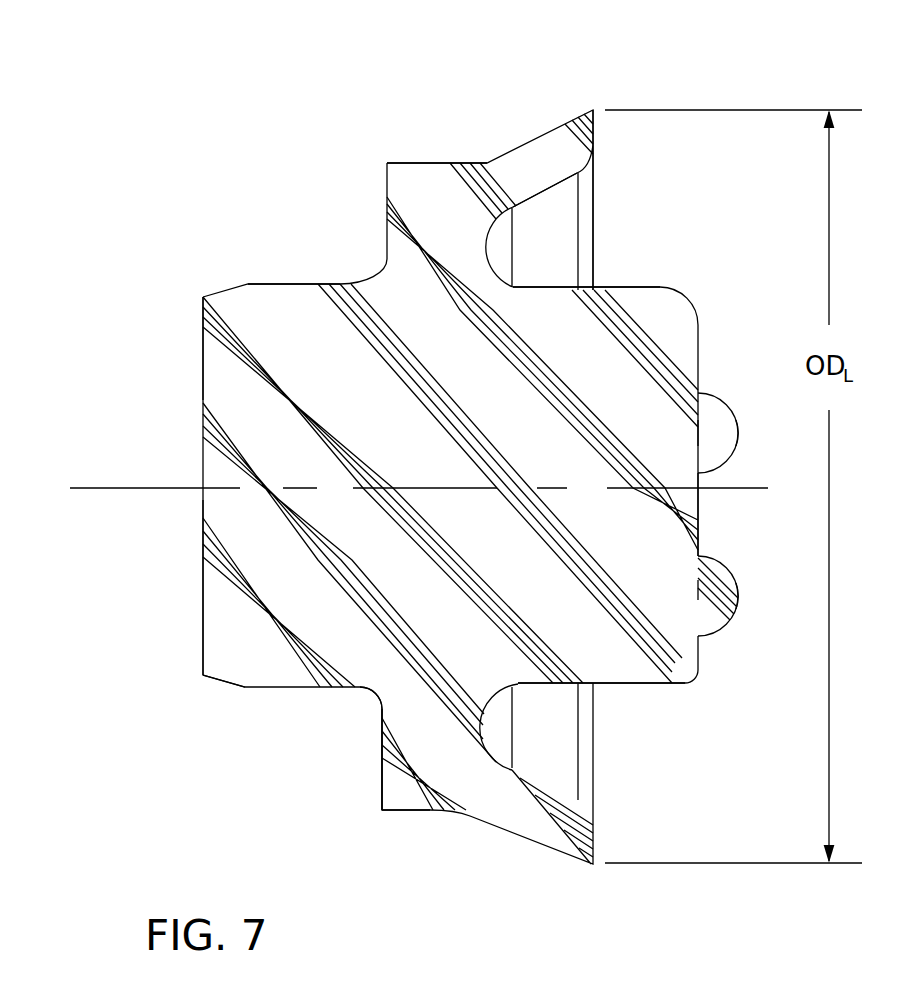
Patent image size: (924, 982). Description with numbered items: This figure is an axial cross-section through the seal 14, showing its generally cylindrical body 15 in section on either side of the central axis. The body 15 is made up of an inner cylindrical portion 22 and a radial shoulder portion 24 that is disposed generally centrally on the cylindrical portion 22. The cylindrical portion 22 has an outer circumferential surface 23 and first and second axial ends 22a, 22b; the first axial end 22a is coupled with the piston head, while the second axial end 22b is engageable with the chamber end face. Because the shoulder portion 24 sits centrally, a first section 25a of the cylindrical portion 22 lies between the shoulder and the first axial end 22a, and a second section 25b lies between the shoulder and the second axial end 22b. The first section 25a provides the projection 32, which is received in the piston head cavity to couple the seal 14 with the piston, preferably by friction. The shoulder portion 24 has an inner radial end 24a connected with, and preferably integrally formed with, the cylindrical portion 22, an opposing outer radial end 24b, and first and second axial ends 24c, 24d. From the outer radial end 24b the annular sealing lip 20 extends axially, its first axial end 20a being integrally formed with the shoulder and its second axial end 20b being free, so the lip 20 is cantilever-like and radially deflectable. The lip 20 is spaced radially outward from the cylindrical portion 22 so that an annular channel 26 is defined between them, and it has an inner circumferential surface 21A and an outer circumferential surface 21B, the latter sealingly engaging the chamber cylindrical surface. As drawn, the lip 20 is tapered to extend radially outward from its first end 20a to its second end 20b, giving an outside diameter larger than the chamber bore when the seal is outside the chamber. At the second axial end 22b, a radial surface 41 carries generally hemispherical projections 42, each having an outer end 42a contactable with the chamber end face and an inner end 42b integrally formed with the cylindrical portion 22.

The seal 14 is at (126, 129).
The body 15 is at (234, 717).
The sealing lip 20 is at (535, 99).
The first axial end 20a is at (487, 160).
The second axial end 20b is at (594, 106).
The inner circumferential surface 21A is at (563, 222).
The outer circumferential surface 21B is at (563, 122).
The inner cylindrical portion 22 is at (242, 266).
The first axial end 22a is at (203, 320).
The second axial end 22b is at (704, 336).
The outer circumferential surface 23 is at (648, 687).
The radial shoulder portion 24 is at (352, 766).
The inner radial end 24a is at (384, 698).
The outer radial end 24b is at (428, 812).
The first axial end 24c is at (380, 742).
The second axial end 24d is at (488, 737).
The first section 25a is at (292, 286).
The second section 25b is at (695, 289).
The annular channel 26 is at (558, 256).
The projection 32 is at (201, 593).
The radial surface 41 is at (698, 525).
The projections 42 is at (735, 419).
The outer end 42a is at (740, 443).
The inner end 42b is at (698, 441).